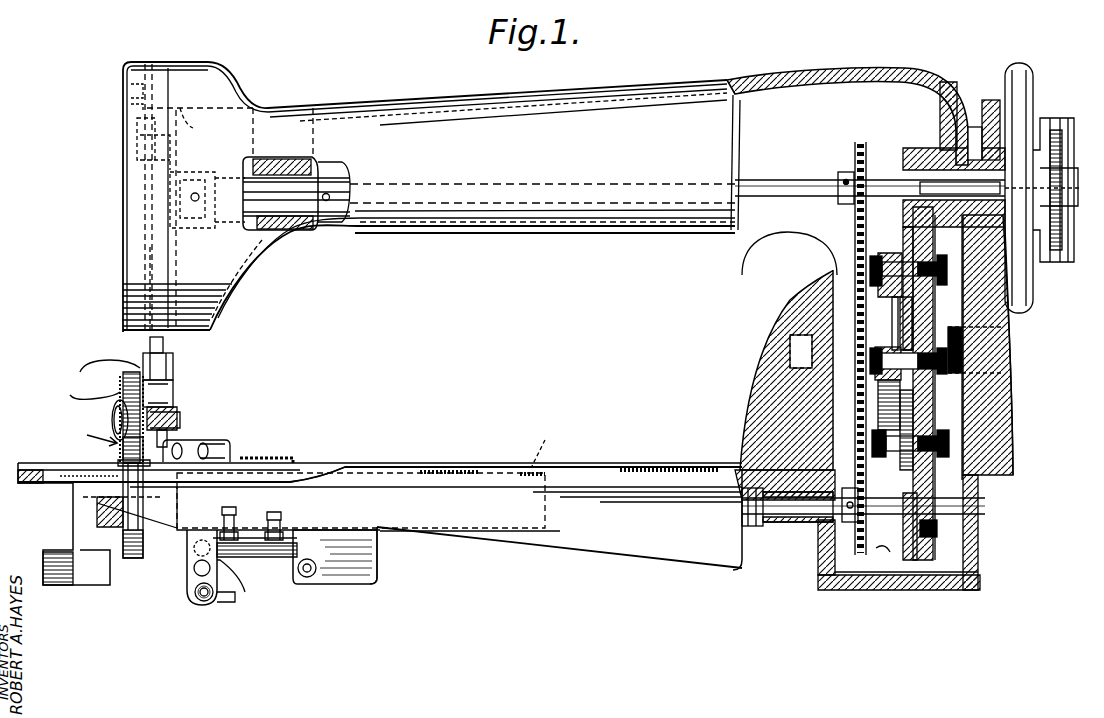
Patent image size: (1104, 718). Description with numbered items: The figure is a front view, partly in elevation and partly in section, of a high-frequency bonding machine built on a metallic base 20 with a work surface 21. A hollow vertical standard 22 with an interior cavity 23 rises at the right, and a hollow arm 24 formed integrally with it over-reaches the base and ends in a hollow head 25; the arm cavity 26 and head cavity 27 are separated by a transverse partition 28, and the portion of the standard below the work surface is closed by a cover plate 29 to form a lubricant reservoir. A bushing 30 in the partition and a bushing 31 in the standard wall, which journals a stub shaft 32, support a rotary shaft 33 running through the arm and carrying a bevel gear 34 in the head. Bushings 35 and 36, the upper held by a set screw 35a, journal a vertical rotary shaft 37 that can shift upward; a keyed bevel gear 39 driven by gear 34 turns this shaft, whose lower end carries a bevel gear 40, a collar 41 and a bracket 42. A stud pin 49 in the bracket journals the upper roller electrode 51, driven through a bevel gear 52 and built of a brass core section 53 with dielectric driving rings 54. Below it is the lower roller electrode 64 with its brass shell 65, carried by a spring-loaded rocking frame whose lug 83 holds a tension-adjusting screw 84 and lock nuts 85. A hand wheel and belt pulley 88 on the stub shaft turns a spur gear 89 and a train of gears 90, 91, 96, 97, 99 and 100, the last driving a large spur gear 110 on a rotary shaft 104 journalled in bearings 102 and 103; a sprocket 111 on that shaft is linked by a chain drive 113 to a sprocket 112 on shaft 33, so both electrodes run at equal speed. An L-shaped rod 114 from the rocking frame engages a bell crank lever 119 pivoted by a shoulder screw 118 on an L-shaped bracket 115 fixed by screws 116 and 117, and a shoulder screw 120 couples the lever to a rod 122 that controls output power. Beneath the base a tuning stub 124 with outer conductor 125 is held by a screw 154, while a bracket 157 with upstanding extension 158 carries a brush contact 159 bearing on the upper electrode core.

The base 20 is at (436, 502).
The work surface 21 is at (476, 462).
The vertical standard 22 is at (1012, 404).
The interior cavity 23 is at (950, 418).
The hollow arm 24 is at (595, 90).
The hollow head 25 is at (216, 62).
The interior cavity 26 is at (760, 108).
The interior cavity 27 is at (200, 128).
The transverse partition 28 is at (283, 170).
The cover plate 29 is at (948, 592).
The bushing 30 is at (322, 236).
The bushing 31 is at (968, 125).
The stub shaft 32 is at (988, 110).
The rotary shaft 33 is at (772, 180).
The bevel gear 34 is at (190, 230).
The bushing 35 is at (146, 62).
The set screw 35a is at (130, 98).
The bushing 36 is at (143, 334).
The vertical rotary shaft 37 is at (150, 247).
The bevel gear 39 is at (137, 150).
The bevel gear 40 is at (178, 405).
The collar 41 is at (174, 358).
The bracket 42 is at (174, 380).
The stud pin 49 is at (182, 421).
The upper roller electrode 51 is at (80, 434).
The bevel gear 52 is at (175, 440).
The brass core section 53 is at (117, 417).
The driving rings 54 is at (99, 379).
The lower roller electrode 64 is at (143, 550).
The brass shell 65 is at (130, 560).
The lug 83 is at (374, 585).
The tension-adjusting screw 84 is at (308, 578).
The lock nuts 85 is at (314, 574).
The hand wheel and belt pulley 88 is at (1057, 118).
The spur gear 89 is at (905, 168).
The gear 90 is at (907, 250).
The gear 91 is at (892, 252).
The gear 96 is at (905, 312).
The gear 97 is at (882, 323).
The gear 99 is at (880, 460).
The spur gear 100 is at (962, 420).
The bearing 102 is at (786, 532).
The bearing 103 is at (978, 517).
The rotary shaft 104 is at (985, 502).
The spur gear 110 is at (905, 588).
The sprocket 111 is at (880, 561).
The sprocket 112 is at (858, 145).
The chain drive 113 is at (855, 322).
The L-shaped rod 114 is at (232, 603).
The L-shaped bracket 115 is at (238, 596).
The screw 116 is at (240, 502).
The screw 117 is at (282, 514).
The shoulder screw 118 is at (206, 600).
The bell crank lever 119 is at (216, 609).
The shoulder screw 120 is at (190, 570).
The rod 122 is at (250, 556).
The tuning stub 124 is at (425, 538).
The outer conductor 125 is at (392, 538).
The screw 154 is at (564, 442).
The bracket 157 is at (320, 466).
The upstanding extension 158 is at (240, 460).
The brush contact 159 is at (123, 455).